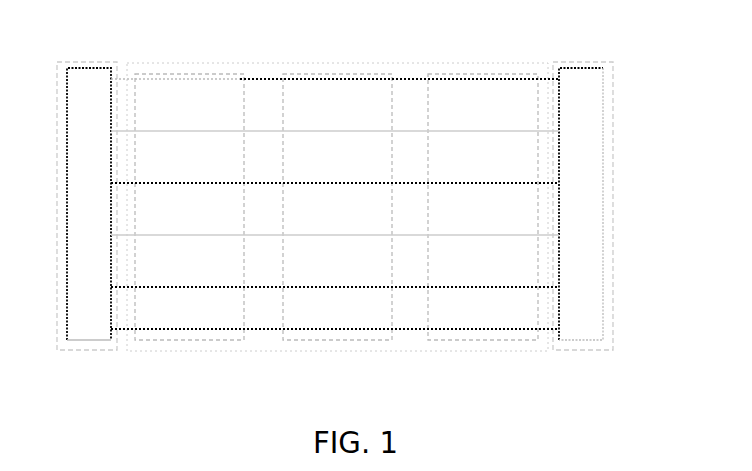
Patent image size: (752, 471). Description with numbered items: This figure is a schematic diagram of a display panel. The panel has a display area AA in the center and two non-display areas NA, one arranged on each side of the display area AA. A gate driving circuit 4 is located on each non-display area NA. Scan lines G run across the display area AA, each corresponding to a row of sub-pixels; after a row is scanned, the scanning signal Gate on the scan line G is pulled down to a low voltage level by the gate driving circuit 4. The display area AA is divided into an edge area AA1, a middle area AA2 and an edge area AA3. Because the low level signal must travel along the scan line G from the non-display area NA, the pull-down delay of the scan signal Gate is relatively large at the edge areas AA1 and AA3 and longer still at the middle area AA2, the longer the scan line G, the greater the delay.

The non-display area NA is at (87, 62).
The gate driving circuit 4 is at (95, 341).
The display area AA is at (309, 63).
The edge area AA1 is at (195, 73).
The middle area AA2 is at (370, 73).
The edge area AA3 is at (482, 73).
The scan line G is at (335, 204).